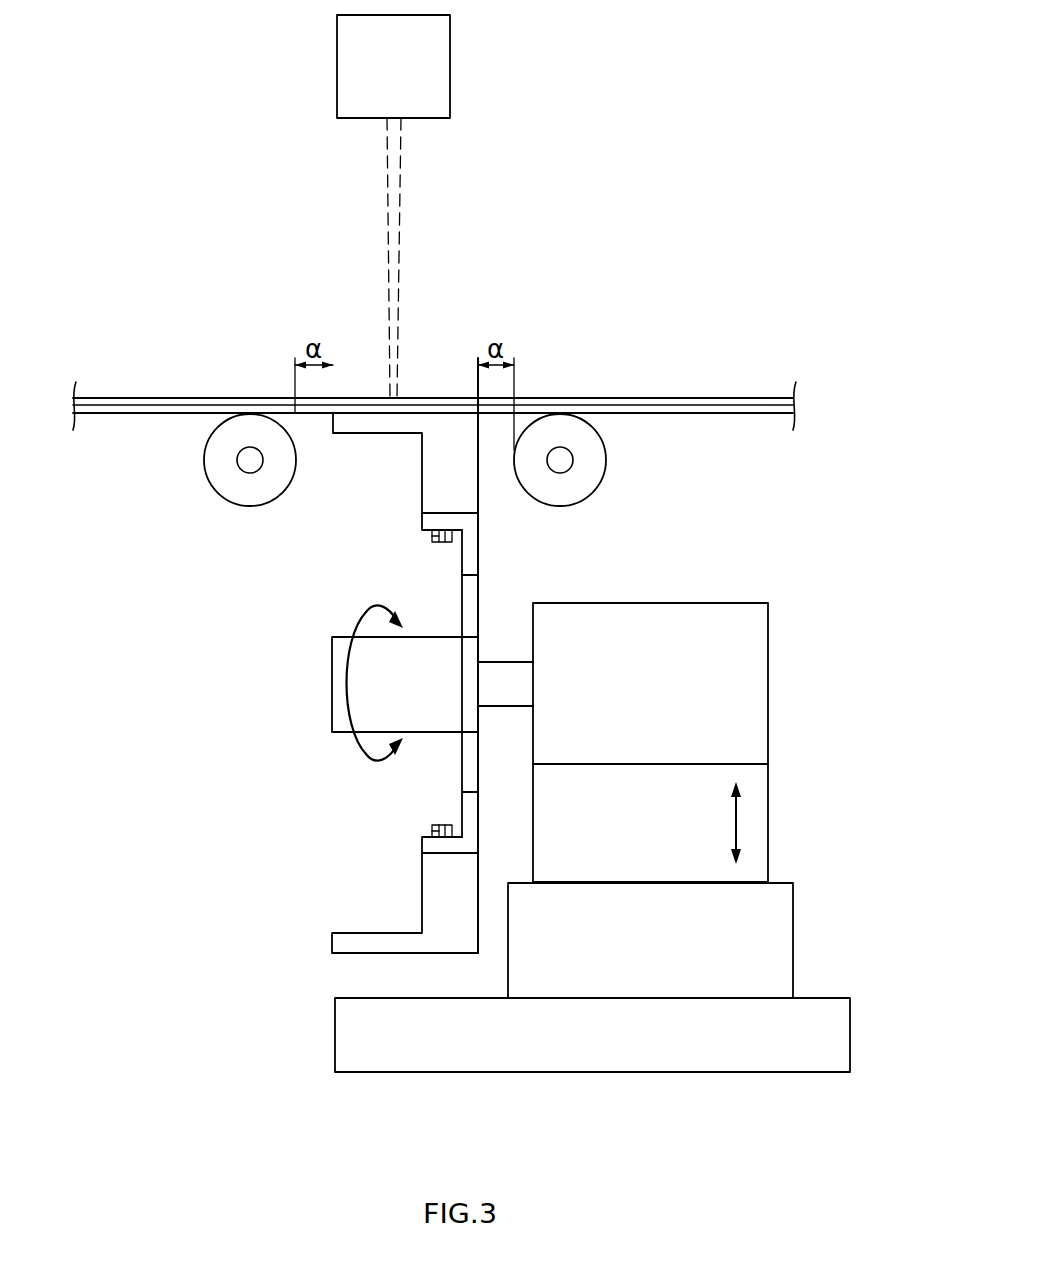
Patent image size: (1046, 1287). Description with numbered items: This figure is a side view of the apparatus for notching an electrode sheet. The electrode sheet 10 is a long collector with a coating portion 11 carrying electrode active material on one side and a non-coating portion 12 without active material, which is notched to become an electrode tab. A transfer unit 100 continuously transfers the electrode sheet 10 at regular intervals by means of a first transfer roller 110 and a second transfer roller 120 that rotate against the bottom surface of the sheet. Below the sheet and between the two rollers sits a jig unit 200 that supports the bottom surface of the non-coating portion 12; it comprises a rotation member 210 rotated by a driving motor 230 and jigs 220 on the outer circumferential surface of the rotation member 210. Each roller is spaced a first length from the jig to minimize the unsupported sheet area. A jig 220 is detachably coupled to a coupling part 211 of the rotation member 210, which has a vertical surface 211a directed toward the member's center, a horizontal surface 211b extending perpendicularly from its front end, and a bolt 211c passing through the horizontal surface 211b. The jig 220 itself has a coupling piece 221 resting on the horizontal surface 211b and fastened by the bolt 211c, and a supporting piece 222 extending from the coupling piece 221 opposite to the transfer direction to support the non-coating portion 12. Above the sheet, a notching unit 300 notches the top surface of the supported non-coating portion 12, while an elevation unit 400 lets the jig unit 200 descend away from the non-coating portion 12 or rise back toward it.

The electrode sheet 10 is at (434, 346).
The coating portion 11 is at (656, 403).
The non-coating portion 12 is at (660, 318).
The transfer unit 100 is at (405, 385).
The first transfer roller 110 is at (250, 432).
The second transfer roller 120 is at (560, 414).
The jig unit 200 is at (594, 655).
The rotation member 210 is at (478, 593).
The coupling part 211 is at (368, 690).
The vertical surface 211a is at (462, 555).
The horizontal surface 211b is at (422, 518).
The bolt 211c is at (432, 537).
The jig 220 is at (591, 468).
The coupling piece 221 is at (463, 490).
The supporting piece 222 is at (382, 423).
The driving motor 230 is at (691, 742).
The notching unit 300 is at (438, 66).
The elevation unit 400 is at (782, 938).